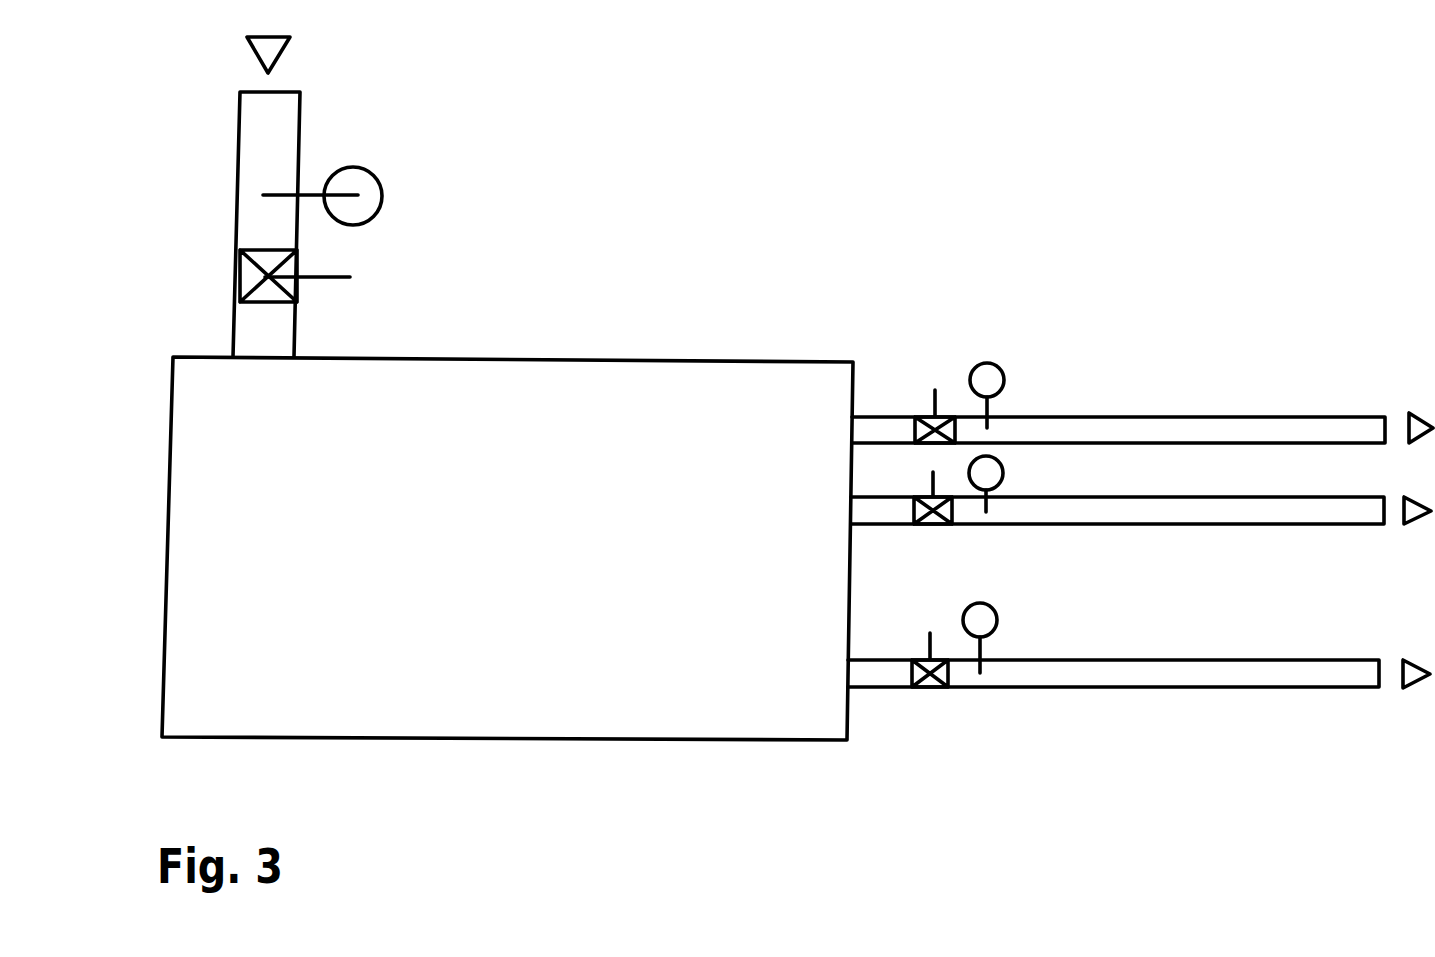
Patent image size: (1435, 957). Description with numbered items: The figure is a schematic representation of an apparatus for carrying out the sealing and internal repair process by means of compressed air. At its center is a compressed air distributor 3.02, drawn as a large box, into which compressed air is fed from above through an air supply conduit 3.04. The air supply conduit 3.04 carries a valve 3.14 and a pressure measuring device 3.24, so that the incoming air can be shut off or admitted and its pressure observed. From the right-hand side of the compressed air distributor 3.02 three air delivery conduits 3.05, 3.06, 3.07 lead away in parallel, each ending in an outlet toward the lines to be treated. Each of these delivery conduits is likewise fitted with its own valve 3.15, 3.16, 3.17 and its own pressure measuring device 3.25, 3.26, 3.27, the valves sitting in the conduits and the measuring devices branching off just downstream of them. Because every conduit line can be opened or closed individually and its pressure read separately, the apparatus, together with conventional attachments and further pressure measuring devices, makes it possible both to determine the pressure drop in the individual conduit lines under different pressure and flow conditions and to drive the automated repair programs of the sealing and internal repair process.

The compressed air distributor 3.02 is at (349, 710).
The air supply conduit 3.04 is at (300, 105).
The air delivery conduit 3.05 is at (1205, 415).
The air delivery conduit 3.06 is at (1252, 526).
The air delivery conduit 3.07 is at (1252, 688).
The valve 3.14 is at (350, 277).
The valve 3.15 is at (925, 417).
The valve 3.16 is at (922, 524).
The valve 3.17 is at (928, 687).
The pressure measuring device 3.24 is at (380, 207).
The pressure measuring device 3.25 is at (1004, 380).
The pressure measuring device 3.26 is at (997, 484).
The pressure measuring device 3.27 is at (987, 642).